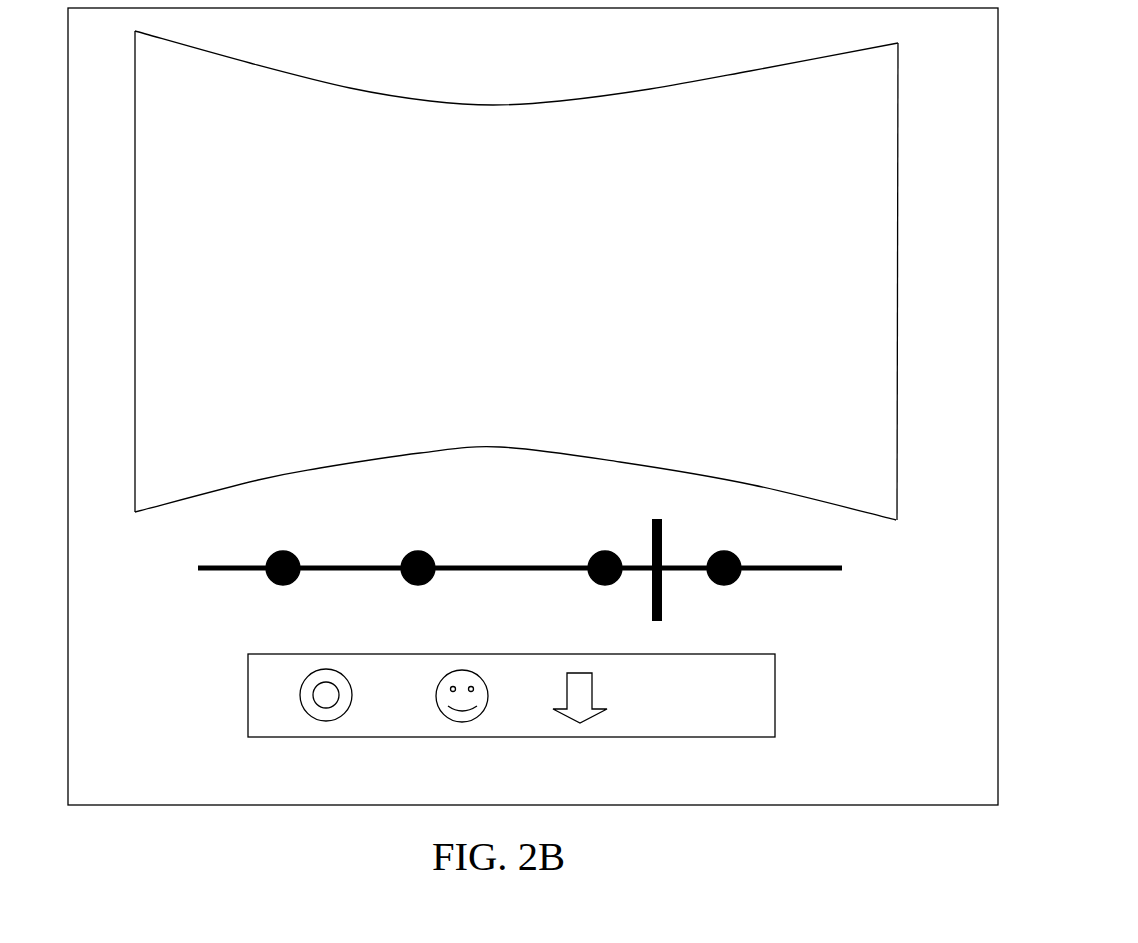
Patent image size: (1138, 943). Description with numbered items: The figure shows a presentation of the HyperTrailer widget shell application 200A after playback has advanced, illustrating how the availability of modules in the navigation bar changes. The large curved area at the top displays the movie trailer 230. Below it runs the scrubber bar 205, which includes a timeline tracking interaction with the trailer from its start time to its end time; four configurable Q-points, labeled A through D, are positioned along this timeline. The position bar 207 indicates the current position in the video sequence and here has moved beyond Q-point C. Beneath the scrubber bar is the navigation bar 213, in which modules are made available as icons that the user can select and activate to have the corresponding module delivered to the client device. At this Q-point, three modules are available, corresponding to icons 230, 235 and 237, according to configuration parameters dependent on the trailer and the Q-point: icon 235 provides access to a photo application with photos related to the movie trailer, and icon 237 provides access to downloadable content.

The shell application 200A is at (999, 77).
The movie trailer 230 is at (283, 390).
The scrubber bar 205 is at (860, 572).
The position bar 207 is at (663, 532).
The navigation bar 213 is at (775, 707).
The icon 235 is at (434, 722).
The icon 237 is at (553, 722).